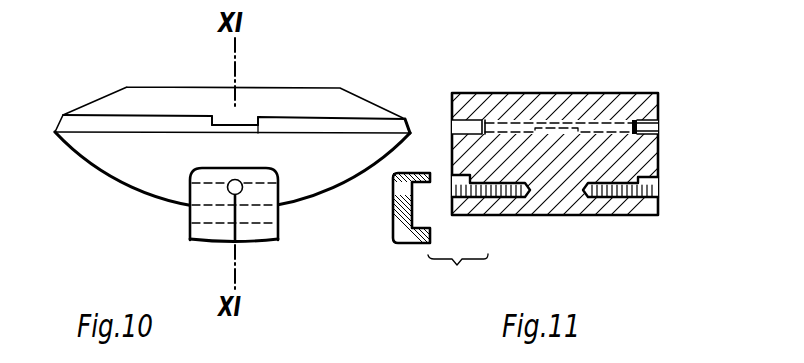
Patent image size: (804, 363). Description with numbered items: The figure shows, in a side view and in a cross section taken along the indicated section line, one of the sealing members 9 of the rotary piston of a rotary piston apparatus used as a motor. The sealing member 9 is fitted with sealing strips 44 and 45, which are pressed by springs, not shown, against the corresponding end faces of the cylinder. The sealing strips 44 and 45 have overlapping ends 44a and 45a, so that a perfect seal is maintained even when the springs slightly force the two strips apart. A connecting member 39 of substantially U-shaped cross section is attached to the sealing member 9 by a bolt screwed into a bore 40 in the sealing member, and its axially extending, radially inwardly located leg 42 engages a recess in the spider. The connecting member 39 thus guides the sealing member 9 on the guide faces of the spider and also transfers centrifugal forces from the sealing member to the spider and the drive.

In FIG. 11, the sealing member 9 is at (650, 168).
In FIG. 10, the connecting member 39 is at (213, 218).
In FIG. 11, the connecting member 39 is at (393, 213).
In FIG. 10, the bore 40 is at (239, 193).
In FIG. 11, the leg 42 is at (423, 244).
In FIG. 10, the sealing strip 44 is at (110, 123).
In FIG. 11, the sealing strip 44 is at (660, 134).
In FIG. 10, the overlapping end 44a is at (217, 131).
In FIG. 10, the sealing strip 45 is at (310, 127).
In FIG. 11, the sealing strip 45 is at (660, 121).
In FIG. 10, the overlapping end 45a is at (238, 123).